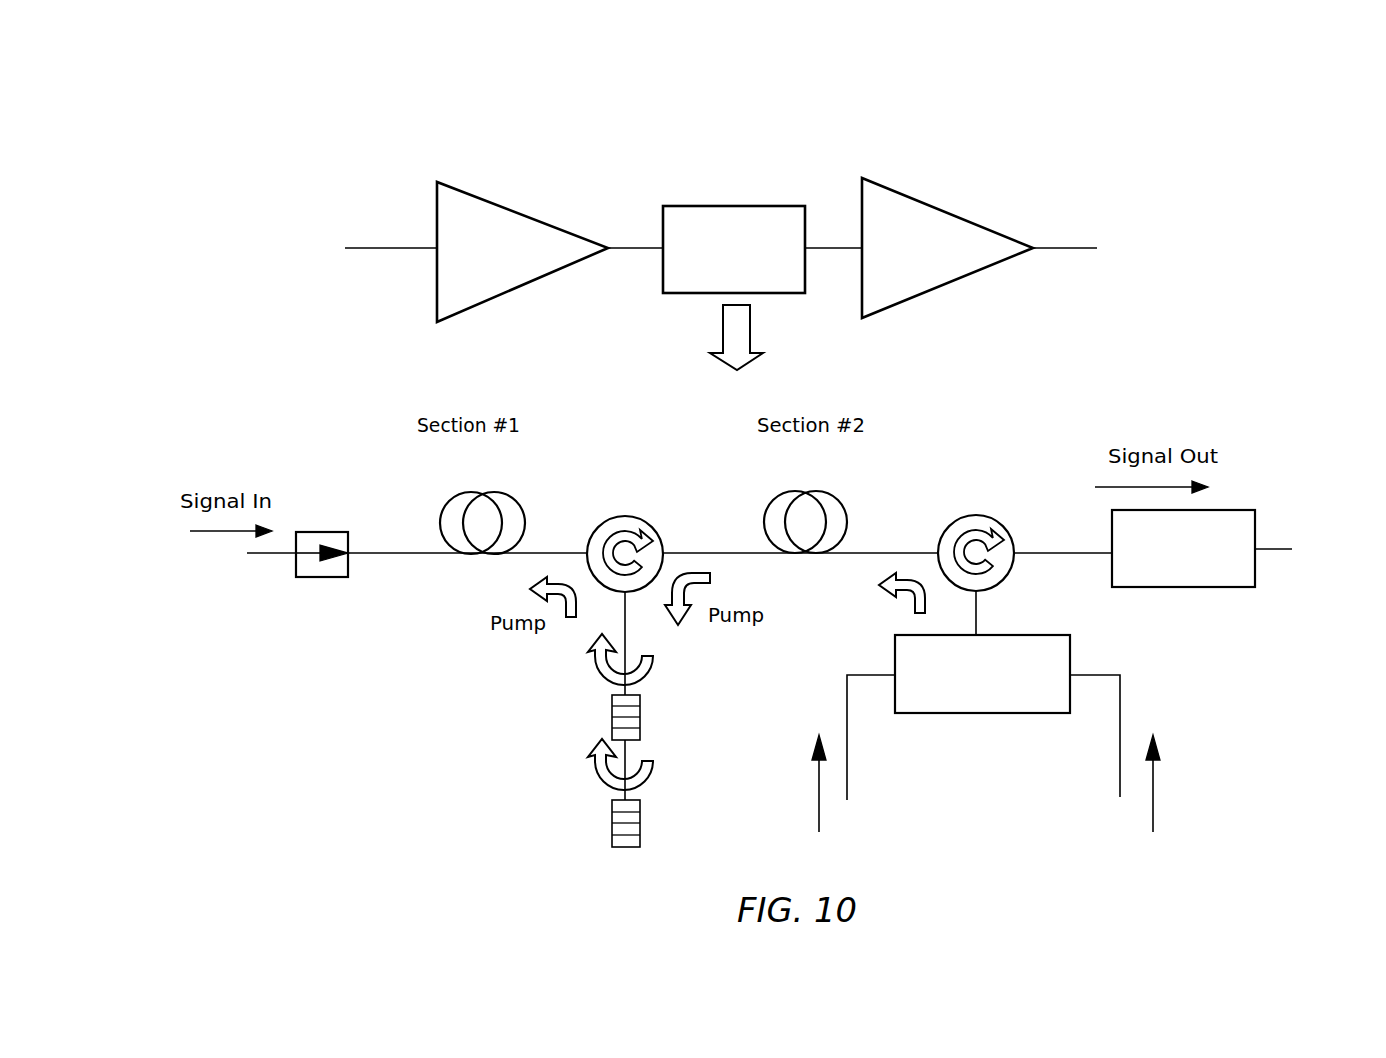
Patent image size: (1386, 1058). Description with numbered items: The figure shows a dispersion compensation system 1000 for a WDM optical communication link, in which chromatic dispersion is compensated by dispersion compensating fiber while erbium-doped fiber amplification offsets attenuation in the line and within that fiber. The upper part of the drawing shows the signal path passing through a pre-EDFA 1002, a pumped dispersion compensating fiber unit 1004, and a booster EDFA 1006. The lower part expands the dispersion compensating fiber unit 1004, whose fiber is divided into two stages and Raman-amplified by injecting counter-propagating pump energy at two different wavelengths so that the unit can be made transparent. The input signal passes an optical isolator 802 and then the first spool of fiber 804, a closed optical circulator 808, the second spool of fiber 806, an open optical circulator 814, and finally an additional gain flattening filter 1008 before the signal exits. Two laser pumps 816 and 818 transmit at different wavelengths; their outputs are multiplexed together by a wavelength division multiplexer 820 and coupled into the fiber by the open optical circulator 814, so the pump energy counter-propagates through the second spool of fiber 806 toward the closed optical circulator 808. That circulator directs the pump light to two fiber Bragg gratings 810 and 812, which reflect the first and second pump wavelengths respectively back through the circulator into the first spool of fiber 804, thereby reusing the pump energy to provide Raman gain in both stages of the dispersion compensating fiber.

The dispersion compensation system 1000 is at (721, 198).
The pre-EDFA 1002 is at (528, 218).
The dispersion compensating fiber unit 1004 is at (742, 228).
The booster EDFA 1006 is at (956, 217).
The gain flattening filter 1008 is at (1232, 538).
The optical isolator 802 is at (349, 534).
The spool of fiber 804 is at (445, 533).
The spool of fiber 806 is at (845, 504).
The closed optical circulator 808 is at (649, 586).
The fiber Bragg grating 810 is at (612, 687).
The fiber Bragg grating 812 is at (609, 793).
The open optical circulator 814 is at (991, 559).
The laser pump 816 is at (842, 748).
The laser pump 818 is at (1140, 748).
The wavelength division multiplexer 820 is at (982, 697).